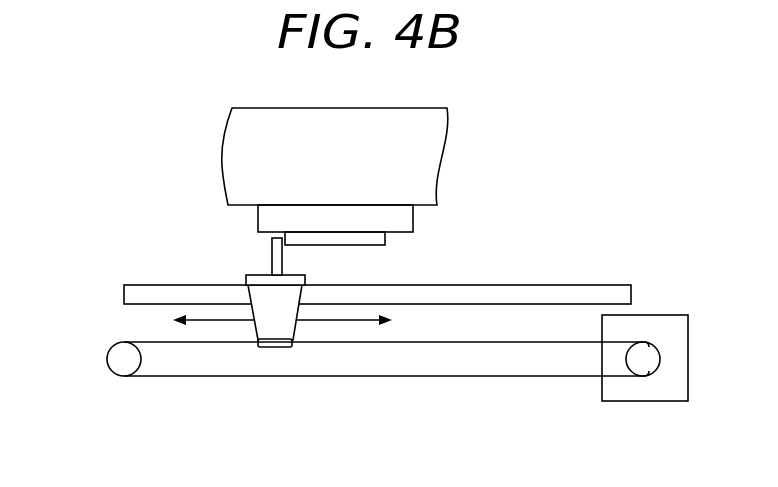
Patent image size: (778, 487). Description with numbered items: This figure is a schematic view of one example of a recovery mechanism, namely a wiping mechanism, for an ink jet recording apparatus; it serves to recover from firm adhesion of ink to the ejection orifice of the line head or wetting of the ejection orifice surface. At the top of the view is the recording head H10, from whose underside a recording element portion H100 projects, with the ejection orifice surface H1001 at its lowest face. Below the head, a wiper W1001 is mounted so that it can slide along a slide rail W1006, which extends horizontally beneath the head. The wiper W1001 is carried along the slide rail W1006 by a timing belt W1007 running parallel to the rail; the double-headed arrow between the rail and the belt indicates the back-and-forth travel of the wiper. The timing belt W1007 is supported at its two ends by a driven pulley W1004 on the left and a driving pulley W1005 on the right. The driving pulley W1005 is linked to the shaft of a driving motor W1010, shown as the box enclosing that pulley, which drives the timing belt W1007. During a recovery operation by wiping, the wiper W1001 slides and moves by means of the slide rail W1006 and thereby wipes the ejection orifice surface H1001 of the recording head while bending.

The liquid ejection head H10 is at (203, 150).
The recording element substrate H100 is at (375, 237).
The ejection orifice surface H1001 is at (323, 243).
The wiper W1001 is at (272, 262).
The slide rail W1006 is at (520, 293).
The timing belt W1007 is at (278, 365).
The driven pulley W1004 is at (122, 358).
The driving pulley W1005 is at (647, 366).
The driving motor W1010 is at (648, 322).